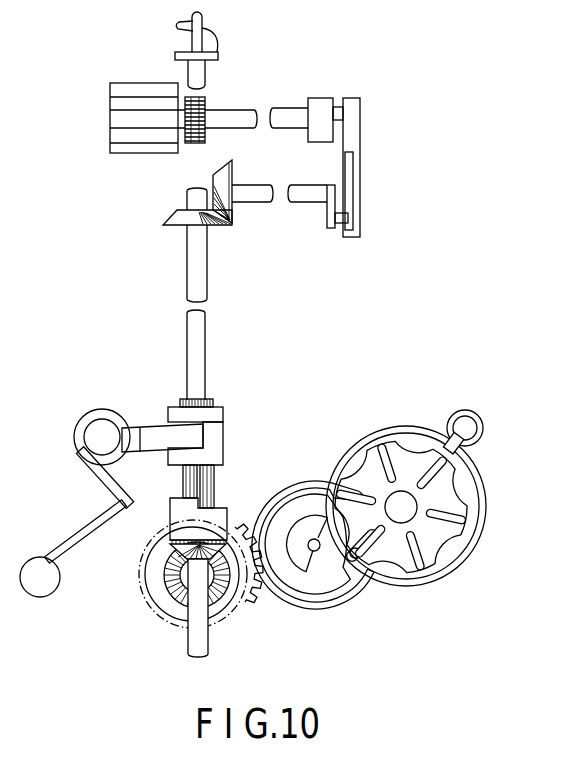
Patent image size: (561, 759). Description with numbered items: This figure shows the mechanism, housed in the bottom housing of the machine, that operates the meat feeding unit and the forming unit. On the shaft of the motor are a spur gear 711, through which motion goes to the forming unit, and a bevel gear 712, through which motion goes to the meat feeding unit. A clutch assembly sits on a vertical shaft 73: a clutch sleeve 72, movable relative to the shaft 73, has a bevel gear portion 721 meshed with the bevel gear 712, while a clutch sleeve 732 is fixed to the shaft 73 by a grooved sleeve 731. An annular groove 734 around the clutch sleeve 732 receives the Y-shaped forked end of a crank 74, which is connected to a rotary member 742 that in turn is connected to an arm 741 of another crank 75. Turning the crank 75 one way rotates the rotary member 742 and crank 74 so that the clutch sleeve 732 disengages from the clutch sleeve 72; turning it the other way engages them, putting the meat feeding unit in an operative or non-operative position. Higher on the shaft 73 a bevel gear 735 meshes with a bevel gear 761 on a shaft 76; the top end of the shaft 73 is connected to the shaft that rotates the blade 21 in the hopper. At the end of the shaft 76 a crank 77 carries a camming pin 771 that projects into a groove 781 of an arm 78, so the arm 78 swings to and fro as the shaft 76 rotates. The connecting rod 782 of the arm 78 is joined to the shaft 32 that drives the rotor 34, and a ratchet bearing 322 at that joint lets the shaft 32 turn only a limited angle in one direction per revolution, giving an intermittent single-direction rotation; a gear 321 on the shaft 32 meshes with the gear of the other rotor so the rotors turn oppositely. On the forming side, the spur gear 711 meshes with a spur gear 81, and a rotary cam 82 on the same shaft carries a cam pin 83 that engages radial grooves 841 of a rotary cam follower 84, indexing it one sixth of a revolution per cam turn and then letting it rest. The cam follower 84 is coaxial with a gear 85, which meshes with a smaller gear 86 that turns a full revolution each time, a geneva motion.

The blade 21 is at (212, 38).
The vertical shaft 73 is at (198, 77).
The rotor 34 is at (133, 90).
The gear 321 is at (205, 107).
The shaft 32 is at (236, 123).
The ratchet bearing 322 is at (316, 100).
The connecting rod 782 is at (338, 110).
The arm 78 is at (349, 100).
The groove 781 is at (348, 182).
The crank 77 is at (332, 222).
The camming pin 771 is at (348, 218).
The bevel gear 761 is at (220, 187).
The shaft 76 is at (258, 202).
The bevel gear 735 is at (183, 221).
The annular groove 734 is at (217, 433).
The rotary member 742 is at (102, 418).
The crank 74 is at (148, 437).
The clutch sleeve 732 is at (213, 460).
The arm 741 is at (87, 472).
The crank 75 is at (70, 542).
The grooved sleeve 731 is at (190, 489).
The clutch sleeve 72 is at (185, 519).
The spur gear 711 is at (141, 594).
The bevel gear 712 is at (177, 601).
The bevel gear portion 721 is at (238, 513).
The spur gear 81 is at (297, 481).
The rotary cam 82 is at (312, 591).
The cam pin 83 is at (355, 561).
The rotary cam follower 84 is at (401, 537).
The radial grooves 841 is at (420, 571).
The gear 85 is at (453, 558).
The gear 86 is at (460, 413).